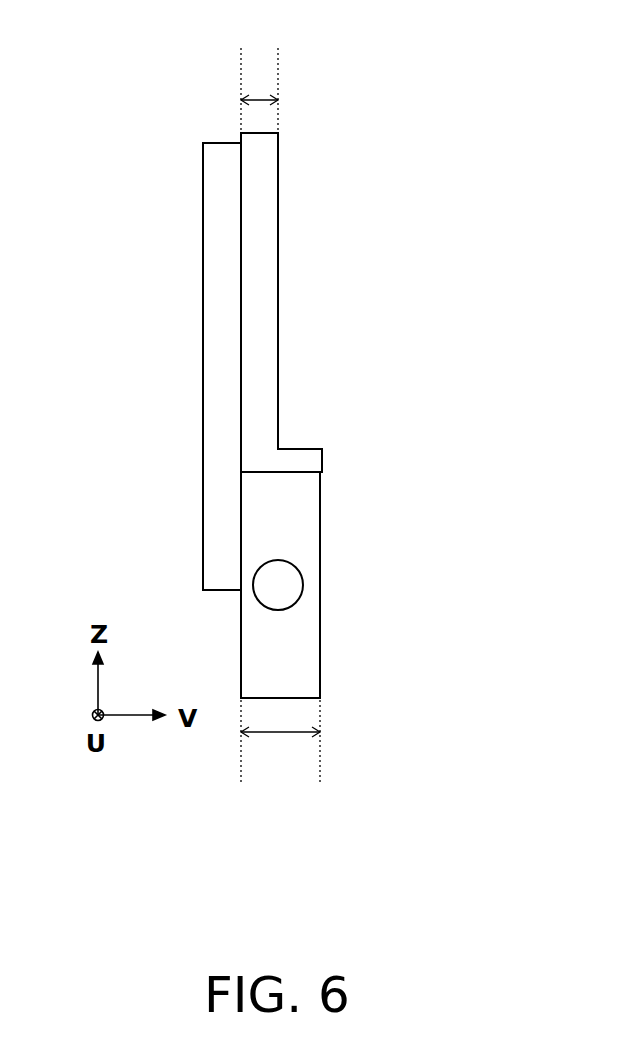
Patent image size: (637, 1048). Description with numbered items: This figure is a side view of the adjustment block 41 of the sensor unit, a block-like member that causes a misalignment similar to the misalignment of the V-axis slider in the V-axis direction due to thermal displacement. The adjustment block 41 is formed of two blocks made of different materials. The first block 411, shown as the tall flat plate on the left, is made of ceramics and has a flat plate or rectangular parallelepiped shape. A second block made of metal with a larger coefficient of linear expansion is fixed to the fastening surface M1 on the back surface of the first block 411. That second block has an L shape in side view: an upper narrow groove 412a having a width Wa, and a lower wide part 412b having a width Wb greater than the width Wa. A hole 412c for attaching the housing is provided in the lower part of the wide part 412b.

The adjustment block 41 is at (277, 34).
The first block 411 is at (205, 383).
The fastening surface M1 is at (241, 262).
The narrow groove 412a is at (278, 330).
The wide part 412b is at (314, 525).
The hole 412c is at (300, 602).
The width of narrow groove Wa is at (258, 100).
The width of wide part Wb is at (283, 730).